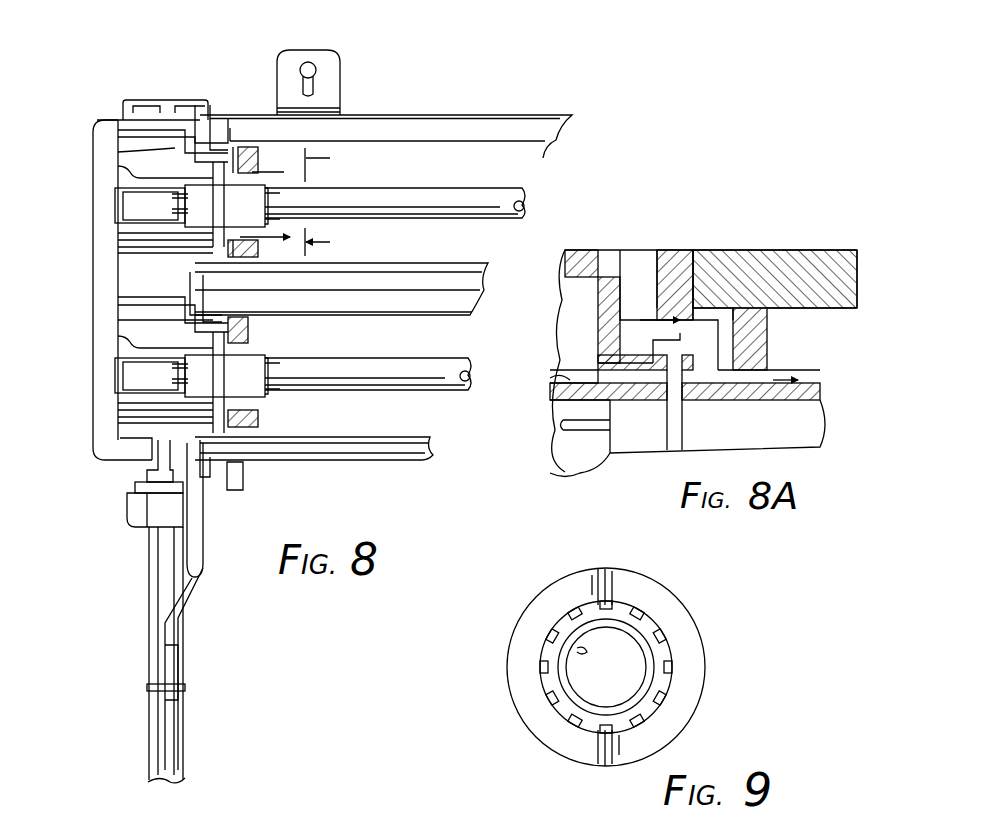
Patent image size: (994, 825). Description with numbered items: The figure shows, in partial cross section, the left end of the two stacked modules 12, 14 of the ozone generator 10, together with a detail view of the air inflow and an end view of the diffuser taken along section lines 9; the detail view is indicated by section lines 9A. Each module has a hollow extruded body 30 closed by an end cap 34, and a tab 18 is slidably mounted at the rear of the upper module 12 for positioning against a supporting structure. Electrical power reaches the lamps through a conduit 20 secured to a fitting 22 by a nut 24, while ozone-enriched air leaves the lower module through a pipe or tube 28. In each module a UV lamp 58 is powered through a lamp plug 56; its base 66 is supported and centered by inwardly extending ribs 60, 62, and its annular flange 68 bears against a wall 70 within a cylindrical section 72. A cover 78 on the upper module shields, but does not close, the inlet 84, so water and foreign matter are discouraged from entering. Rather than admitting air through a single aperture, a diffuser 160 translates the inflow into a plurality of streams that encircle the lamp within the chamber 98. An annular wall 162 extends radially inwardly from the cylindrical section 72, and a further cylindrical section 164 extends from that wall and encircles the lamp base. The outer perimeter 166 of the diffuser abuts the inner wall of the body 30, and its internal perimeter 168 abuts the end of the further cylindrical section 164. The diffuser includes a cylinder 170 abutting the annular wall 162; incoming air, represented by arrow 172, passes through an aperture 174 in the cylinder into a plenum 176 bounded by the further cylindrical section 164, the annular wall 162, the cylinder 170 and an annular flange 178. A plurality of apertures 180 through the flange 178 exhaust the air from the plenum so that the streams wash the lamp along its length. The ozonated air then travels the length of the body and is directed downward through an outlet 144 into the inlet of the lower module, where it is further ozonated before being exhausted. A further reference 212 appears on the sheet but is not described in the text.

In FIG. 8, the ozone generator 10 is at (434, 507).
In FIG. 8, the module 12 is at (412, 114).
In FIG. 8A, the module 12 is at (730, 248).
In FIG. 8, the module 14 is at (290, 463).
In FIG. 8, the tab 18 is at (340, 70).
In FIG. 8, the conduit 20 is at (155, 560).
In FIG. 8, the fitting 22 is at (138, 480).
In FIG. 8, the nut 24 is at (130, 512).
In FIG. 8, the pipe or tube 28 is at (190, 604).
In FIG. 8, the body 30 is at (460, 115).
In FIG. 8A, the body 30 is at (783, 250).
In FIG. 8, the end cap 34 is at (93, 165).
In FIG. 8, the lamp plug 56 is at (135, 198).
In FIG. 8, the lamp 58 is at (478, 186).
In FIG. 8, the rib 60 is at (118, 240).
In FIG. 8A, the rib 60 is at (560, 377).
In FIG. 8, the rib 62 is at (118, 167).
In FIG. 8, the base 66 is at (268, 207).
In FIG. 8A, the base 66 is at (803, 423).
In FIG. 8, the annular flange 68 is at (224, 200).
In FIG. 8A, the annular flange 68 is at (663, 437).
In FIG. 8, the wall 70 is at (176, 148).
In FIG. 8A, the wall 70 is at (592, 355).
In FIG. 8, the cylindrical section 72 is at (222, 158).
In FIG. 8A, the cylindrical section 72 is at (630, 333).
In FIG. 8, the cover 78 is at (138, 100).
In FIG. 8, the inlet 84 is at (197, 105).
In FIG. 8A, the inlet 84 is at (645, 267).
In FIG. 8, the chamber 98 is at (372, 155).
In FIG. 8, the outlet 144 is at (185, 278).
In FIG. 8, the diffuser 160 is at (268, 150).
In FIG. 8A, the diffuser 160 is at (775, 337).
In FIG. 9, the diffuser 160 is at (764, 724).
In FIG. 8, the annular wall 162 is at (250, 146).
In FIG. 8A, the annular wall 162 is at (683, 370).
In FIG. 8, the further cylindrical section 164 is at (250, 180).
In FIG. 8A, the further cylindrical section 164 is at (747, 397).
In FIG. 8A, the perimeter 166 is at (810, 253).
In FIG. 9, the perimeter 166 is at (704, 660).
In FIG. 9, the internal perimeter 168 is at (582, 640).
In FIG. 8A, the cylinder 170 is at (753, 313).
In FIG. 8A, the arrow 172 is at (638, 283).
In FIG. 8A, the aperture 174 is at (715, 300).
In FIG. 8A, the plenum 176 is at (768, 363).
In FIG. 9, the annular flange 178 is at (652, 655).
In FIG. 9, the apertures 180 is at (605, 600).
In FIG. 8, the base 212 is at (315, 822).
In FIG. 8, the section lines 9 is at (327, 202).
In FIG. 9, the section line 9A is at (497, 556).